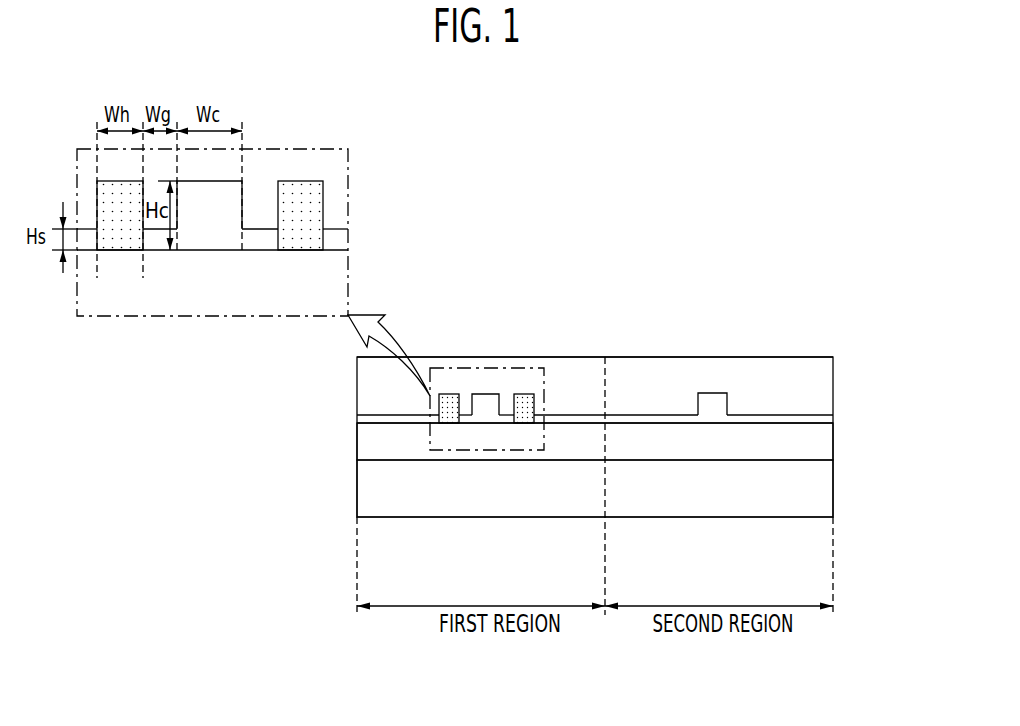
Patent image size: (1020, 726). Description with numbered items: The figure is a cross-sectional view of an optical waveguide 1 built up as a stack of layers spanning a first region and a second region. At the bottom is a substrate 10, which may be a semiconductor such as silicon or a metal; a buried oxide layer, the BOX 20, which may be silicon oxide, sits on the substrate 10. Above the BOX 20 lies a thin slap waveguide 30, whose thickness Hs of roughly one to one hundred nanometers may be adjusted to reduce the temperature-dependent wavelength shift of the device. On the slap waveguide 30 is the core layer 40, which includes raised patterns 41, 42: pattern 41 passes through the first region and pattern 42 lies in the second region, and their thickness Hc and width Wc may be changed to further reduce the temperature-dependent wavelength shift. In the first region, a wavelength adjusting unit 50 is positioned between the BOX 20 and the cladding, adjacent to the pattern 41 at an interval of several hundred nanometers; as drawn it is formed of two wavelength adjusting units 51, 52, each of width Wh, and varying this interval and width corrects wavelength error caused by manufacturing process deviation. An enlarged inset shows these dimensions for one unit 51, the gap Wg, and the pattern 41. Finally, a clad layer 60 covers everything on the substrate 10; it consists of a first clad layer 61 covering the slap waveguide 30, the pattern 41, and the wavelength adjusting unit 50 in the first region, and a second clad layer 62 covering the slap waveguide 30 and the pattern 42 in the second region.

The optical waveguide 1 is at (768, 193).
The substrate 10 is at (823, 492).
The Buried Oxide (BOX) 20 is at (823, 447).
The slap waveguide 30 is at (823, 421).
The core layer 40 is at (548, 284).
The pattern 41 is at (486, 394).
The pattern 42 is at (712, 393).
The wavelength adjusting unit 50 is at (548, 560).
The wavelength adjusting unit 51 is at (447, 423).
The wavelength adjusting unit 52 is at (527, 423).
The clad layer 60 is at (677, 284).
The first clad layer 61 is at (585, 368).
The second clad layer 62 is at (663, 368).